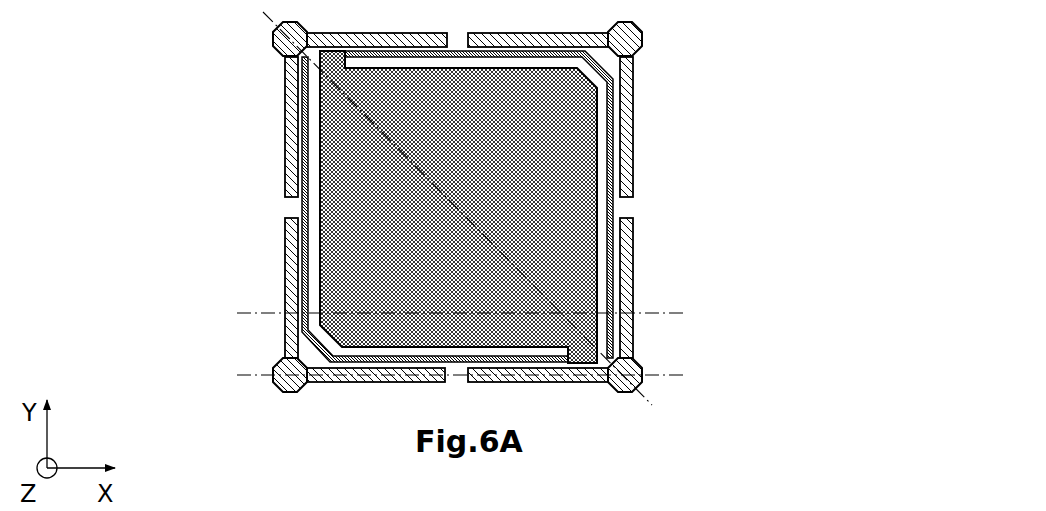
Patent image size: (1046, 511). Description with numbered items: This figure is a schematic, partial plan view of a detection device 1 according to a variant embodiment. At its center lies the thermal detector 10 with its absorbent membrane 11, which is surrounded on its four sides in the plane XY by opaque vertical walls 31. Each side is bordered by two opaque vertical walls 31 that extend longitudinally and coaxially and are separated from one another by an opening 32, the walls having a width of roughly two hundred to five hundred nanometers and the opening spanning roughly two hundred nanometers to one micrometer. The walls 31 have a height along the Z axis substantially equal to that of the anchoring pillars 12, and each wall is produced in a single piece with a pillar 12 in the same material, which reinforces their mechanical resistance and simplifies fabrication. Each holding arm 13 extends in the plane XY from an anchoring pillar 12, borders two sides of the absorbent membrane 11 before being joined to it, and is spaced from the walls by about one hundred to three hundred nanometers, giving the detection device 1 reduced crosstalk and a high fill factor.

The detection device 1 is at (184, 38).
The thermal detector 10 is at (280, 109).
The absorbent membrane 11 is at (316, 205).
The anchoring pillar 12 is at (646, 40).
The holding arm 13 is at (298, 143).
The opaque vertical wall 31 is at (636, 128).
The opening 32 is at (636, 207).